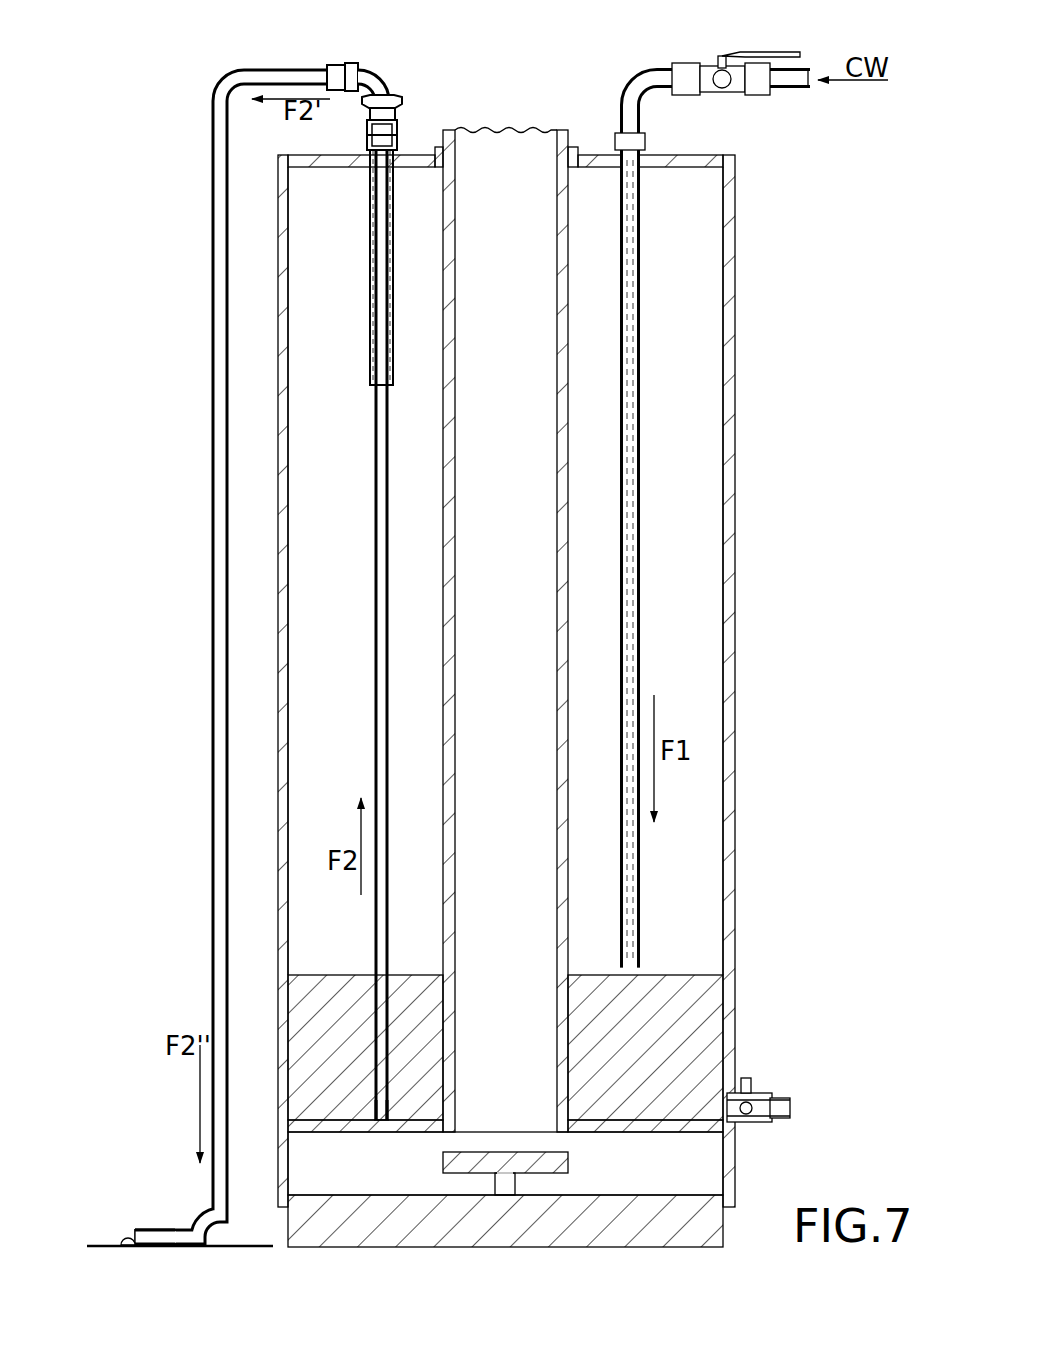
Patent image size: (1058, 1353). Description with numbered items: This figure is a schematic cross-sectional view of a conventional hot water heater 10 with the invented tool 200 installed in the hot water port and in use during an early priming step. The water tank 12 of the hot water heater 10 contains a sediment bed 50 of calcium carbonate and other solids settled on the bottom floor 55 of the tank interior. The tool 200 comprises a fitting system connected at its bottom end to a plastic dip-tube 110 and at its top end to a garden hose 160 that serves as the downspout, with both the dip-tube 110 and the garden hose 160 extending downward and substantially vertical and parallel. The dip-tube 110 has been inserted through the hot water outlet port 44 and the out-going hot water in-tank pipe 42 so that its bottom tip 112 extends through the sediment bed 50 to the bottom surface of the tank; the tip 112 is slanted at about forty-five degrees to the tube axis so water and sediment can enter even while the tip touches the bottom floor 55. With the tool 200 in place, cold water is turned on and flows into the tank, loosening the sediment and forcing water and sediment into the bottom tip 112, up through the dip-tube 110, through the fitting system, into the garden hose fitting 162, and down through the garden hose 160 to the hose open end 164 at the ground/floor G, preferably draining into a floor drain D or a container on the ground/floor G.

The hot water heater 10 is at (758, 243).
The water tank 12 is at (735, 540).
The out-going hot water in-tank pipe 42 is at (370, 280).
The hot water outlet port 44 is at (397, 138).
The sediment bed 50 is at (403, 1025).
The bottom floor 55 is at (405, 1120).
The dip-tube 110 is at (375, 522).
The bottom tip 112 is at (373, 1118).
The garden hose 160 is at (213, 690).
The garden hose fitting 162 is at (344, 66).
The hose open end 164 is at (124, 1237).
The tool 200 is at (290, 632).
The floor drain D is at (121, 1240).
The ground/floor G is at (94, 1245).